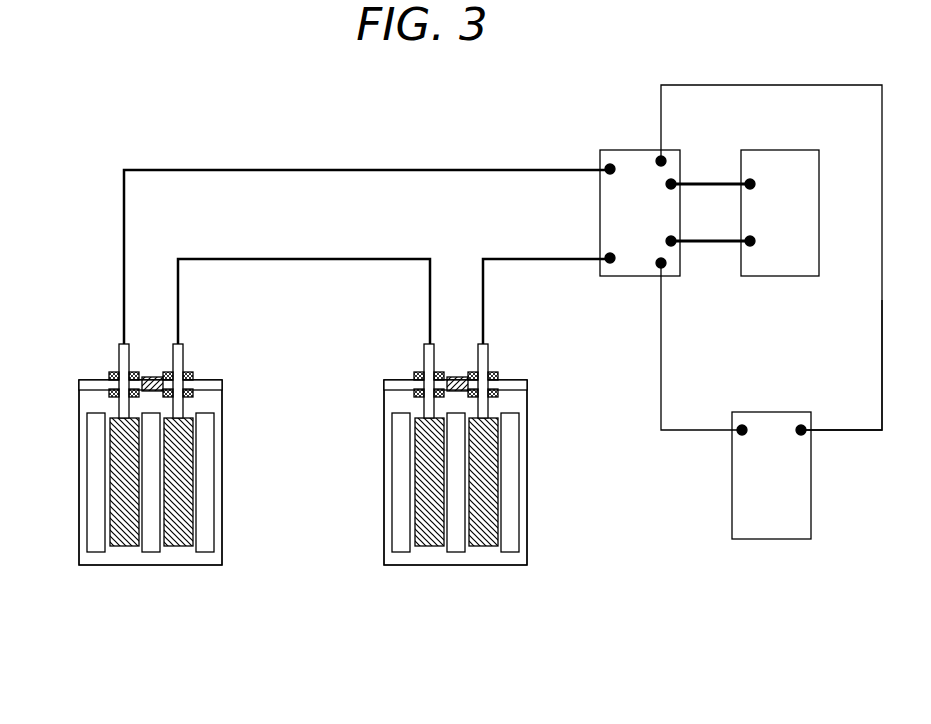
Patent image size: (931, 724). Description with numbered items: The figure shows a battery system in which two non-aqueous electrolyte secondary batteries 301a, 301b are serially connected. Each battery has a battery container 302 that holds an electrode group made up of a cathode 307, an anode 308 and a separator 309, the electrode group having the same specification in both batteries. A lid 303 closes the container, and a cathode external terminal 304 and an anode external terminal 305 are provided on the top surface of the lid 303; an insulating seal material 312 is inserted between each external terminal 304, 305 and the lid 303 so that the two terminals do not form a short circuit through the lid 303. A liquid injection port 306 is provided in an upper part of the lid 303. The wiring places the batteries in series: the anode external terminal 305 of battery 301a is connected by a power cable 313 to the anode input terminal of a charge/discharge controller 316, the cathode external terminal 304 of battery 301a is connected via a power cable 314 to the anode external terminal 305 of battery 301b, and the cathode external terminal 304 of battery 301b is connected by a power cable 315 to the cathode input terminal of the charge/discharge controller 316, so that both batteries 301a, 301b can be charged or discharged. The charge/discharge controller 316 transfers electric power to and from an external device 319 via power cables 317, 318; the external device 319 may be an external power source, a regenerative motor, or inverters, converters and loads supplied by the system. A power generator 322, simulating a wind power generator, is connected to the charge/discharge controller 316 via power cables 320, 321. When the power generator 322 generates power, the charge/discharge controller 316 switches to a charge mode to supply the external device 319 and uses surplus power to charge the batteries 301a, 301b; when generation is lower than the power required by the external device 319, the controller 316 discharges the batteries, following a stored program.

The non-aqueous electrolyte secondary battery 301a is at (480, 660).
The non-aqueous electrolyte secondary battery 301b is at (175, 660).
The battery container 302 is at (80, 445).
The lid 303 is at (385, 382).
The cathode external terminal 304 is at (119, 357).
The anode external terminal 305 is at (183, 354).
The liquid injection port 306 is at (148, 377).
The cathode 307 is at (123, 548).
The anode 308 is at (177, 548).
The separator 309 is at (90, 503).
The insulating seal material 312 is at (109, 395).
The power cable 313 is at (528, 257).
The power cable 314 is at (300, 259).
The power cable 315 is at (300, 170).
The charge/discharge controller 316 is at (640, 213).
The power cable 317 is at (710, 248).
The power cable 318 is at (710, 180).
The external device 319 is at (780, 213).
The power cable 320 is at (661, 362).
The power cable 321 is at (853, 432).
The power generator 322 is at (771, 475).